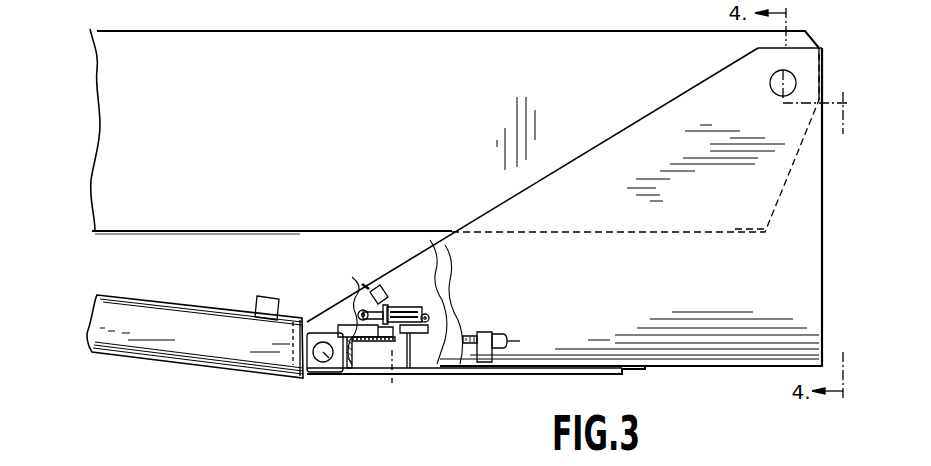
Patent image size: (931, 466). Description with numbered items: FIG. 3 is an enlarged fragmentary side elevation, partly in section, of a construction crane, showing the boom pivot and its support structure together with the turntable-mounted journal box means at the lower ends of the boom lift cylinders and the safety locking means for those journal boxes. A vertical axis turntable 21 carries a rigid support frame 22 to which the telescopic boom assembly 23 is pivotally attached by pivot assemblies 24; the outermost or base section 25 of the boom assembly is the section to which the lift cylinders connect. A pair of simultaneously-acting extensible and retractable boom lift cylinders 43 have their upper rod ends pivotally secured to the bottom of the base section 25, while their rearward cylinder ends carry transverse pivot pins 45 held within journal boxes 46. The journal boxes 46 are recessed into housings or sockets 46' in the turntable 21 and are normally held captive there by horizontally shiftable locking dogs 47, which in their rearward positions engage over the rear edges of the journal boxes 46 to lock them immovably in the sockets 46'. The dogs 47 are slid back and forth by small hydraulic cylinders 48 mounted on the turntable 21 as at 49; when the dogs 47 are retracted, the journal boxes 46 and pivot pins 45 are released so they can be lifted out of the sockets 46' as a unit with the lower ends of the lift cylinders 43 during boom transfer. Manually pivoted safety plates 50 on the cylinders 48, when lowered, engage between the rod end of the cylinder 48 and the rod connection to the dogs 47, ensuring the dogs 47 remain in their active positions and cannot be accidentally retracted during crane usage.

The turntable 21 is at (593, 374).
The rigid support frame 22 is at (808, 254).
The telescopic boom assembly 23 is at (103, 88).
The pivot assembly 24 is at (794, 88).
The base section 25 is at (323, 236).
The boom lift cylinder 43 is at (208, 320).
The transverse pivot pin 45 is at (318, 372).
The journal box 46 is at (366, 370).
The socket 46' is at (376, 379).
The locking dog 47 is at (346, 300).
The hydraulic cylinder 48 is at (412, 306).
The cylinder mounting 49 is at (428, 326).
The safety plate 50 is at (388, 292).